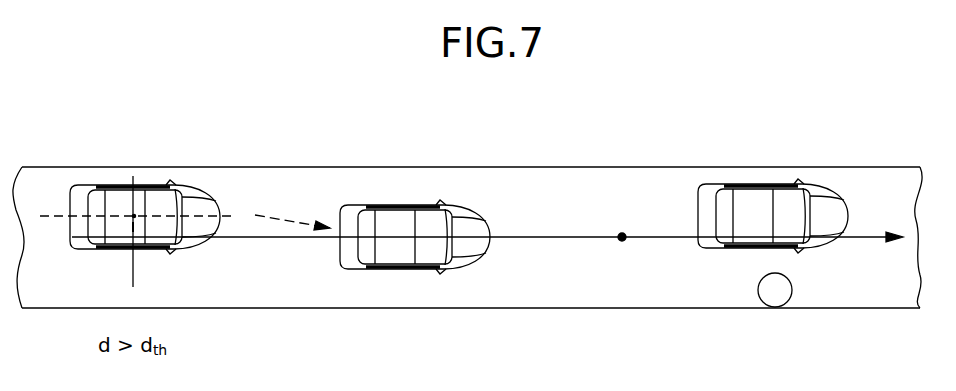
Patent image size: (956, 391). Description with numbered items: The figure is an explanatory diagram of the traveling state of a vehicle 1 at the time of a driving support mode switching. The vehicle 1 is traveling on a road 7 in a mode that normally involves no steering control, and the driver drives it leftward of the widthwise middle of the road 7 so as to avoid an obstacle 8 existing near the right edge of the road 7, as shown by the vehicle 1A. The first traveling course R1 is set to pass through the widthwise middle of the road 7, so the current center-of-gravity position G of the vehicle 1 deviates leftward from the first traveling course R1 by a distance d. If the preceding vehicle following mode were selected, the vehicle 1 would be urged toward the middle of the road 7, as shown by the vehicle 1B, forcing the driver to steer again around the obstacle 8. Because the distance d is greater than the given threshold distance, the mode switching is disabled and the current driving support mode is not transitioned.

The vehicle 1 is at (188, 199).
The vehicle avoiding obstacle 1A is at (824, 200).
The vehicle urged toward middle 1B is at (465, 210).
The road 7 is at (622, 180).
The obstacle 8 is at (775, 307).
The first traveling course R1 is at (535, 236).
The center-of-gravity position G is at (134, 216).
The distance d is at (126, 252).